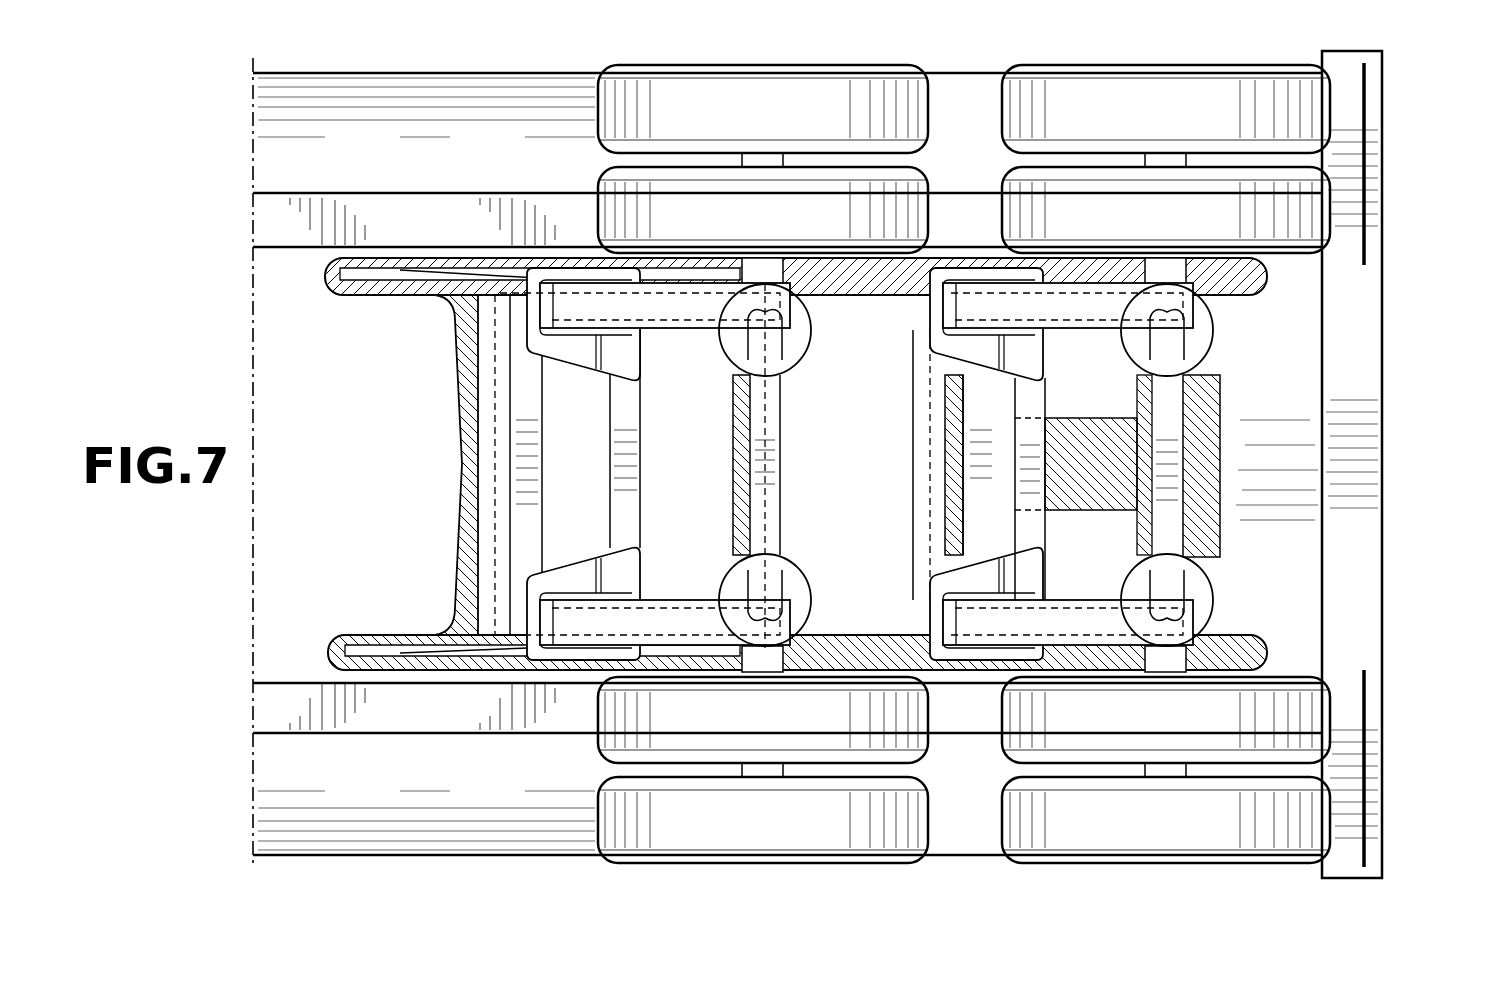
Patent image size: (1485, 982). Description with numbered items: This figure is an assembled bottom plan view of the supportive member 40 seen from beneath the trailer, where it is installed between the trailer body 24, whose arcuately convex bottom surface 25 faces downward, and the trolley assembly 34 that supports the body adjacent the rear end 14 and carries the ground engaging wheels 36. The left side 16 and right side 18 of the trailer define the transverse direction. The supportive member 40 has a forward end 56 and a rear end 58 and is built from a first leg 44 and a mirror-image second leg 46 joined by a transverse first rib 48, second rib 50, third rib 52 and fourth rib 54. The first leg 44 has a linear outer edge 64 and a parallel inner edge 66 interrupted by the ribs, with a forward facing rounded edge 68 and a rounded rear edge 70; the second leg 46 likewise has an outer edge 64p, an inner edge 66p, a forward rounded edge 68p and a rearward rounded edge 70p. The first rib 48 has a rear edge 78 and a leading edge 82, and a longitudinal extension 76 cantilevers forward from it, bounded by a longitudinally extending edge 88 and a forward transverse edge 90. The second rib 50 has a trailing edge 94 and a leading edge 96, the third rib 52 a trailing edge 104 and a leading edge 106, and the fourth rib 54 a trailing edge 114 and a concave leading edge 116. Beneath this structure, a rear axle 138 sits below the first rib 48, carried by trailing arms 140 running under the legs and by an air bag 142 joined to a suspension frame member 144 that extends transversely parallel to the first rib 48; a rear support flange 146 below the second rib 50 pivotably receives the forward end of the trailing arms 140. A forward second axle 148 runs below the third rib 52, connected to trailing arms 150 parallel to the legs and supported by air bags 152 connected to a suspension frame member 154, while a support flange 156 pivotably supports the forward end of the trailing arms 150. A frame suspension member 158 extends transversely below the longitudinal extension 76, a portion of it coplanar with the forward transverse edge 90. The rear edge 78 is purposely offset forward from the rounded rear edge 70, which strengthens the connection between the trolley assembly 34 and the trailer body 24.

The rear end 14 is at (1415, 192).
The left side 16 is at (395, 58).
The right side 18 is at (390, 875).
The trailer body 24 is at (315, 768).
The bottom surface 25 is at (306, 477).
The trolley assembly 34 is at (1218, 60).
The ground engaging wheels 36 is at (757, 98).
The supportive member 40 is at (455, 532).
The first leg 44 is at (410, 672).
The second leg 46 is at (383, 255).
The first rib 48 is at (1222, 452).
The second rib 50 is at (945, 548).
The third rib 52 is at (733, 455).
The fourth rib 54 is at (462, 465).
The forward end 56 is at (305, 265).
The rear end 58 is at (1300, 268).
The outer edge 64 is at (470, 672).
The outer edge 64p is at (442, 262).
The inner edge 66 is at (415, 637).
The inner edge 66p is at (418, 296).
The forward facing rounded edge 68 is at (330, 652).
The forward rounded edge 68p is at (332, 282).
The rounded rear edge 70 is at (1272, 645).
The rearward rounded edge 70p is at (1272, 282).
The longitudinal extension 76 is at (1090, 430).
The rear edge 78 is at (1220, 400).
The leading edge 82 is at (1140, 510).
The longitudinally extending edge 88 is at (1065, 418).
The forward transverse edge 90 is at (990, 470).
The trailing edge 94 is at (963, 445).
The leading edge 96 is at (935, 487).
The trailing edge 104 is at (770, 430).
The leading edge 106 is at (735, 485).
The trailing edge 114 is at (495, 432).
The leading edge 116 is at (458, 492).
The rear axle 138 is at (1163, 268).
The trailing arms 140 is at (1072, 302).
The air bag 142 is at (1200, 348).
The suspension frame member 144 is at (472, 387).
The rear support flange 146 is at (935, 348).
The forward second axle 148 is at (765, 268).
The trailing arms 150 is at (672, 302).
The air bags 152 is at (800, 346).
The suspension frame member 154 is at (775, 447).
The support flange 156 is at (640, 362).
The frame suspension member 158 is at (1045, 548).